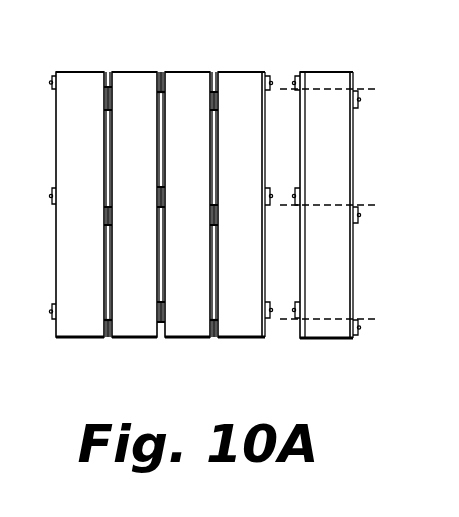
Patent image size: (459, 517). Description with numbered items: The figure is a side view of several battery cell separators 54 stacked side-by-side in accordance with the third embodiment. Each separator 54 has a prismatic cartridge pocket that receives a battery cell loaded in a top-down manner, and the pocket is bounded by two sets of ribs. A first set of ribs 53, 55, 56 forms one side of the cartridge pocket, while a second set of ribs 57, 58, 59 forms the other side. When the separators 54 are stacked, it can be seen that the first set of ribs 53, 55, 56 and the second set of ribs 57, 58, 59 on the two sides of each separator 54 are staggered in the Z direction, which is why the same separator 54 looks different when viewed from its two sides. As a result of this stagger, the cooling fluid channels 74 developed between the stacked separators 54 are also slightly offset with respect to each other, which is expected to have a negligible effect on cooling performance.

The rib of first set 53 is at (107, 338).
The battery cell separator 54 is at (237, 317).
The rib of first set 55 is at (103, 215).
The rib of first set 56 is at (107, 90).
The rib of second set 57 is at (272, 314).
The rib of second set 58 is at (272, 195).
The rib of second set 59 is at (272, 80).
The cooling fluid channel 74 is at (212, 157).